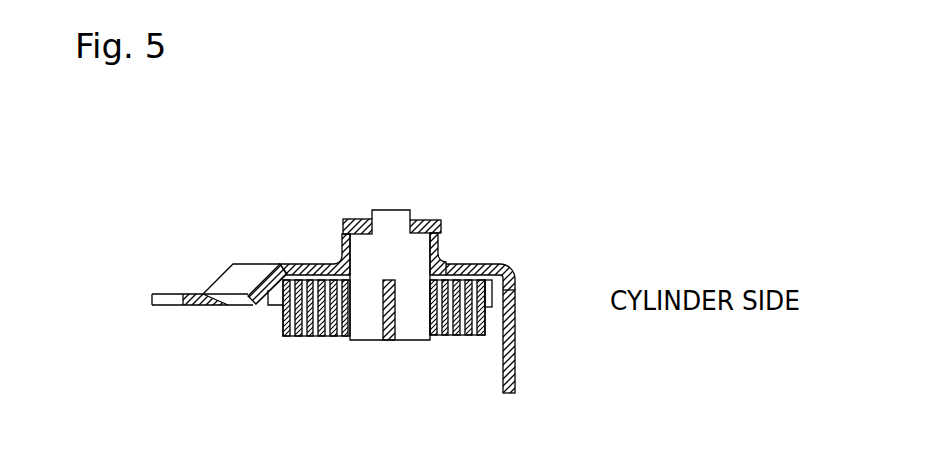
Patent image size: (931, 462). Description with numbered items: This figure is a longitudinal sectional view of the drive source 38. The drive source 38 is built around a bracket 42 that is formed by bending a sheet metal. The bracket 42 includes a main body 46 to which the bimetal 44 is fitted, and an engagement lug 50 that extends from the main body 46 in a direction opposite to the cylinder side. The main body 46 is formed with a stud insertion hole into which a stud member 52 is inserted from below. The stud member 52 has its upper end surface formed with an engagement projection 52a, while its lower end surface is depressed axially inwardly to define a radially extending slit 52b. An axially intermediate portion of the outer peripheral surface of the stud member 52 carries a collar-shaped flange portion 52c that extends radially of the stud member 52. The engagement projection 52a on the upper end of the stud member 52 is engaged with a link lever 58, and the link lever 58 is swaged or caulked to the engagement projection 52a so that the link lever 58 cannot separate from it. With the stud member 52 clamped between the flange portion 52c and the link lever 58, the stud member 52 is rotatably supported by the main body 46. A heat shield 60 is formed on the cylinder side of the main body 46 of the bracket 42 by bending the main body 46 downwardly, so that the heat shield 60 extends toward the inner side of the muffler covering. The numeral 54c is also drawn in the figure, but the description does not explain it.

The drive source 38 is at (411, 272).
The bracket 42 is at (518, 272).
The bimetal 44 is at (297, 338).
The main body 46 is at (305, 264).
The engagement lug 50 is at (203, 294).
The stud member 52 is at (352, 341).
The engagement projection 52a is at (393, 209).
The slit 52b is at (393, 342).
The flange portion 52c is at (445, 268).
The flange portion 54c is at (428, 262).
The link lever 58 is at (352, 217).
The heat shield 60 is at (517, 350).